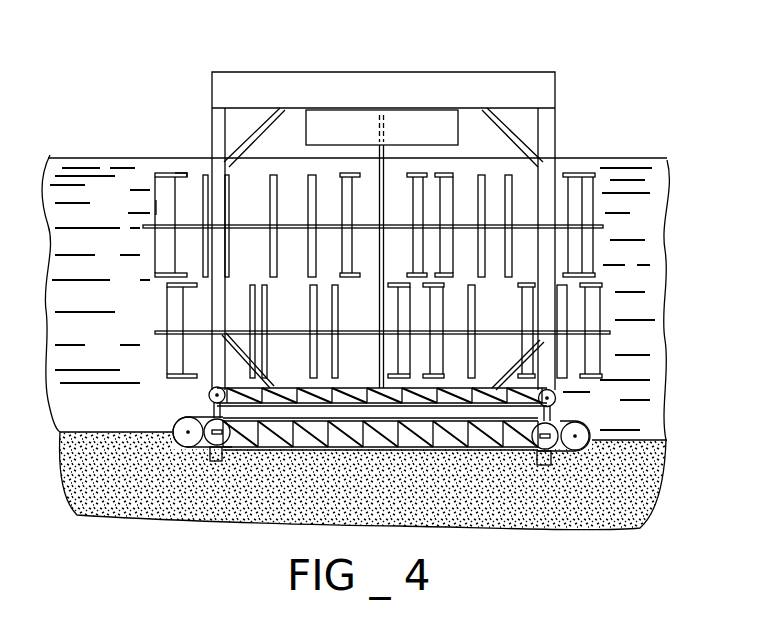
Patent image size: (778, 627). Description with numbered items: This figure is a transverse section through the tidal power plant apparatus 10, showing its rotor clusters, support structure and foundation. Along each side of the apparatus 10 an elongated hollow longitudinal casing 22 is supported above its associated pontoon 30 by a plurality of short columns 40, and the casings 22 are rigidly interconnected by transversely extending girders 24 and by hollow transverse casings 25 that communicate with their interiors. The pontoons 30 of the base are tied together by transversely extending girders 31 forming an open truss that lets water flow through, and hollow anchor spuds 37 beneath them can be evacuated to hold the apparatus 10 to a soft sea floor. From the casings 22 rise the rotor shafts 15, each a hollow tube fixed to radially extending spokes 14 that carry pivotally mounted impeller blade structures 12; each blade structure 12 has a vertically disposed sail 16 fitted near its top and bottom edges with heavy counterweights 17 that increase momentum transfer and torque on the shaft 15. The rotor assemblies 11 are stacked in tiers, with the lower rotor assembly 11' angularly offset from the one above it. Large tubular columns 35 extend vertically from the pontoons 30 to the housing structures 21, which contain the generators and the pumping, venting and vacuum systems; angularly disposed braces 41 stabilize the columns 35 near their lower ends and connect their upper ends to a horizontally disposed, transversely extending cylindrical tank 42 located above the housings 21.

The apparatus 10 is at (374, 197).
The rotor assembly 11 is at (394, 146).
The lower rotor assembly 11' is at (391, 330).
The impeller blade structure 12 is at (153, 190).
The spoke 14 is at (190, 226).
The rotor shaft 15 is at (399, 150).
The sail 16 is at (160, 207).
The counterweight 17 is at (185, 172).
The housing structure 21 is at (438, 122).
The longitudinal casing 22 is at (209, 394).
The transverse girder 24 is at (380, 454).
The transverse casing 25 is at (648, 437).
The pontoon 30 is at (186, 437).
The girder 31 is at (443, 438).
The tubular column 35 is at (215, 128).
The anchor spud 37 is at (222, 453).
The short column 40 is at (349, 469).
The brace 41 is at (252, 113).
The cylindrical tank 42 is at (348, 90).